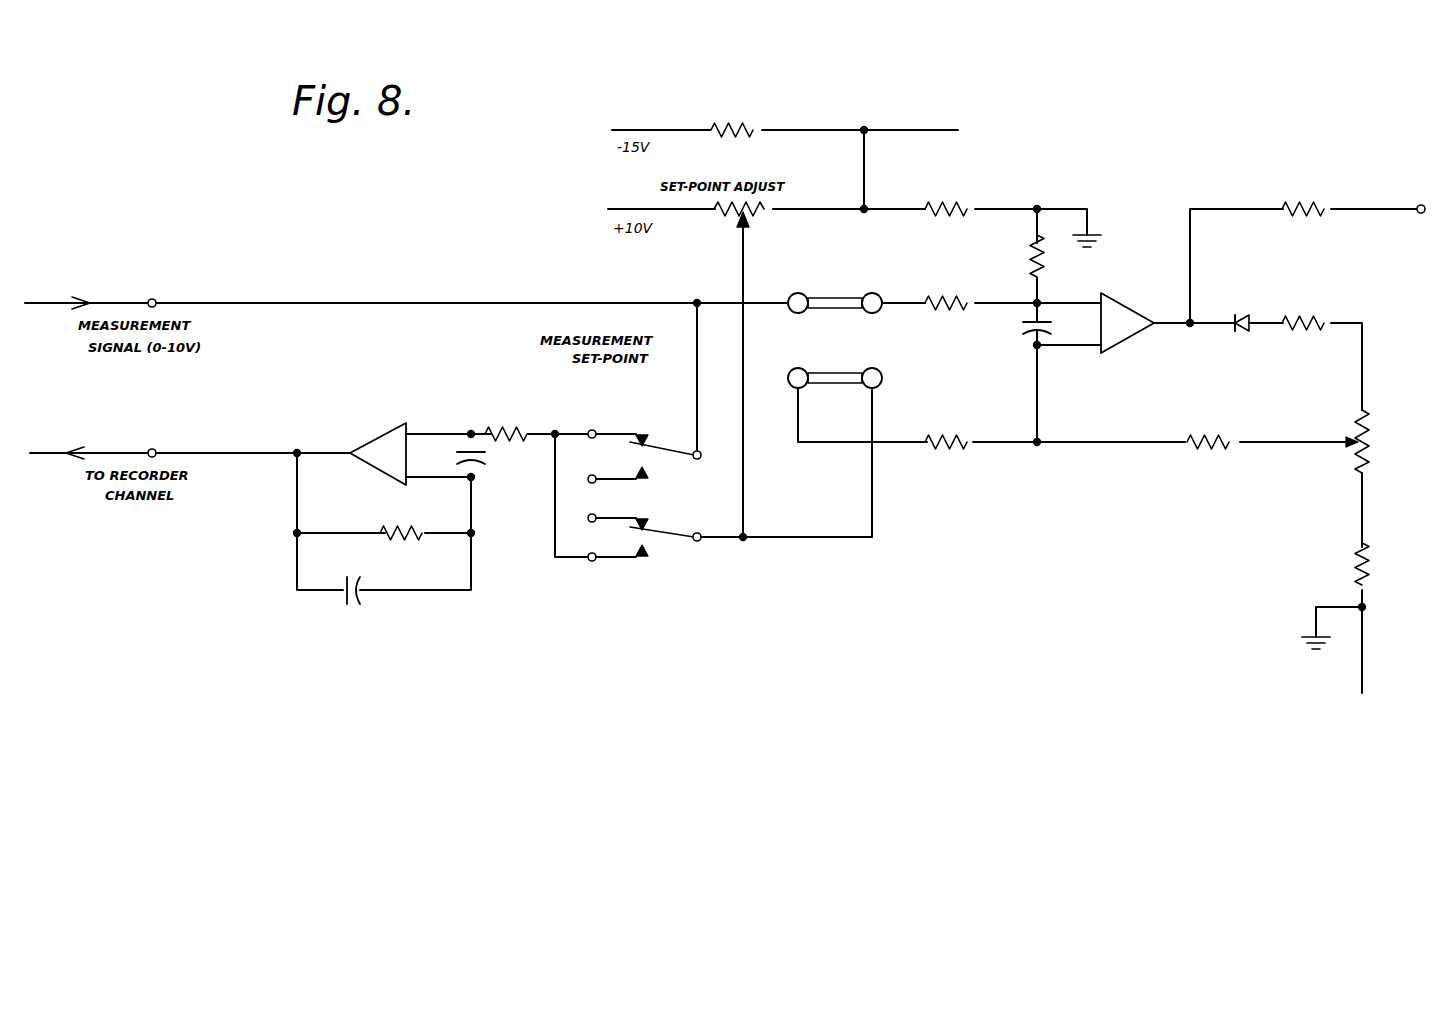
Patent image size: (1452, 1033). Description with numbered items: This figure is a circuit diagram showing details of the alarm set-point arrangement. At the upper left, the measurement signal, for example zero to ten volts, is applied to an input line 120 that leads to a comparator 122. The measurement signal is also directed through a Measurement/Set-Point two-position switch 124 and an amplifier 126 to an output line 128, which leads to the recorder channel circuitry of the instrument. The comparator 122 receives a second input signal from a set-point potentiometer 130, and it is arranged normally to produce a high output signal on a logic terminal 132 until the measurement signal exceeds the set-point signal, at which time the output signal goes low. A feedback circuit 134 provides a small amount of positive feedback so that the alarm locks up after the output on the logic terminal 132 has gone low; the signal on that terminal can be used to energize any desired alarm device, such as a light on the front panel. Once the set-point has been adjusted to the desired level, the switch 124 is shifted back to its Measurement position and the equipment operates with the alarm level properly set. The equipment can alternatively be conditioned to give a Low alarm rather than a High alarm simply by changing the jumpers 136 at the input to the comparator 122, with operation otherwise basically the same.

The input line 120 is at (226, 303).
The comparator 122 is at (1120, 327).
The two-position switch 124 is at (627, 426).
The amplifier 126 is at (386, 440).
The output line 128 is at (205, 453).
The set-point potentiometer 130 is at (762, 225).
The logic terminal 132 is at (1421, 205).
The feedback circuit 134 is at (1333, 396).
The jumpers 136 is at (860, 355).